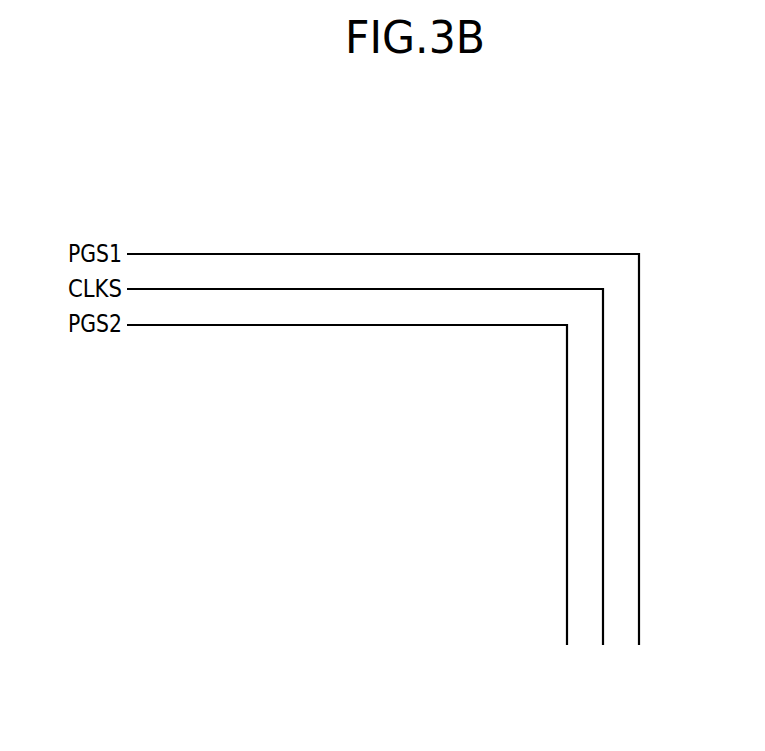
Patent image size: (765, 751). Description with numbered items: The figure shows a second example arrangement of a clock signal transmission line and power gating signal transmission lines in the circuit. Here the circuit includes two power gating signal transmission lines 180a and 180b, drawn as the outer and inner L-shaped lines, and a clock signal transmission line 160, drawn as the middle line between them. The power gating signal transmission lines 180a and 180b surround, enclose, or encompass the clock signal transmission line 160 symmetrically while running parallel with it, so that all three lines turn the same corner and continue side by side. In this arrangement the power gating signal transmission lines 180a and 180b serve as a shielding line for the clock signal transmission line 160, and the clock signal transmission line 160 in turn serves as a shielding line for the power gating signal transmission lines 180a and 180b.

The clock signal transmission line 160 is at (284, 277).
The power gating signal transmission line 180a is at (369, 243).
The power gating signal transmission line 180b is at (368, 338).